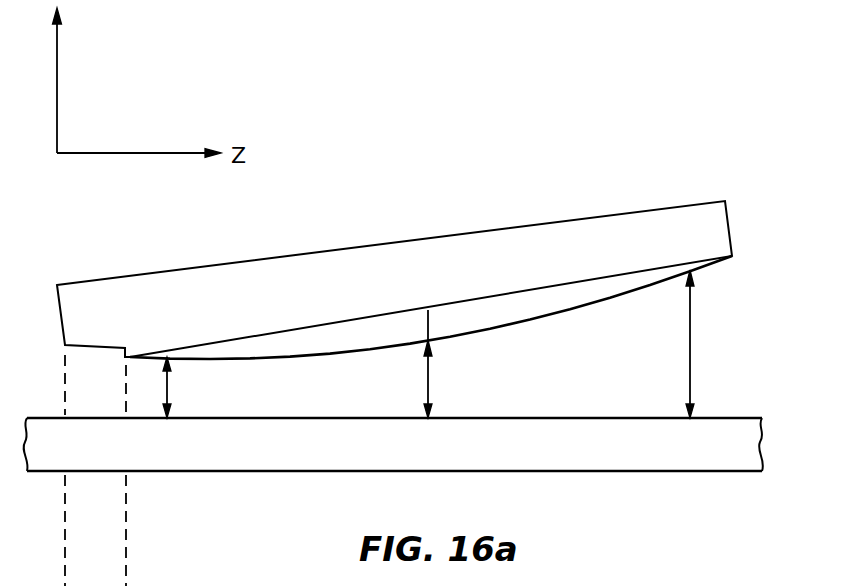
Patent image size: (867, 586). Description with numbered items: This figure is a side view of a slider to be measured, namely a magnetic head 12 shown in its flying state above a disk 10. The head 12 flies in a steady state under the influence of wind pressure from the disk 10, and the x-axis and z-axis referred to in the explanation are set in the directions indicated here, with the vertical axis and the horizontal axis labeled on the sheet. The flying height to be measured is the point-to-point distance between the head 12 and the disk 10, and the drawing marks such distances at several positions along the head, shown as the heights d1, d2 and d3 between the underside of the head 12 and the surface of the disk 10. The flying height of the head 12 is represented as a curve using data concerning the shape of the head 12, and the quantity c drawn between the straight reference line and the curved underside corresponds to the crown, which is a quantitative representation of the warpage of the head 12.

The magnetic head 12 is at (313, 260).
The disk 10 is at (342, 458).
The first fly height d1 is at (168, 392).
The second fly height d2 is at (430, 378).
The third fly height d3 is at (692, 335).
The camber c is at (428, 323).